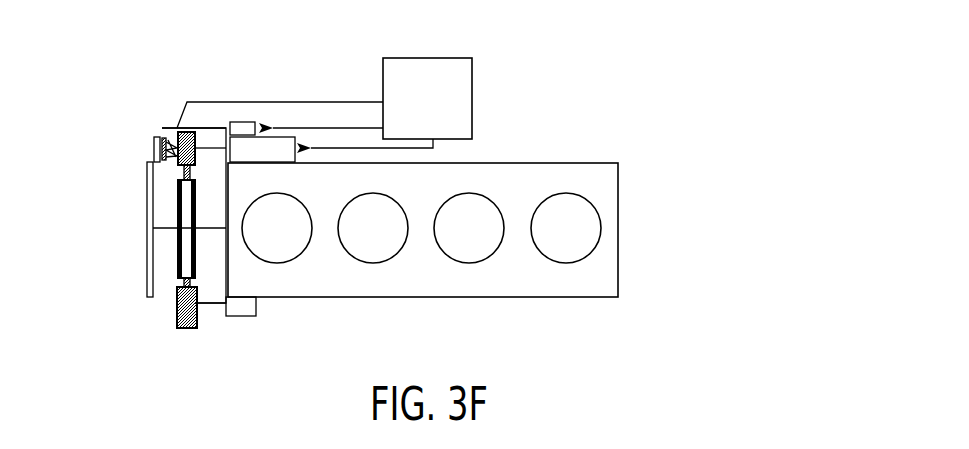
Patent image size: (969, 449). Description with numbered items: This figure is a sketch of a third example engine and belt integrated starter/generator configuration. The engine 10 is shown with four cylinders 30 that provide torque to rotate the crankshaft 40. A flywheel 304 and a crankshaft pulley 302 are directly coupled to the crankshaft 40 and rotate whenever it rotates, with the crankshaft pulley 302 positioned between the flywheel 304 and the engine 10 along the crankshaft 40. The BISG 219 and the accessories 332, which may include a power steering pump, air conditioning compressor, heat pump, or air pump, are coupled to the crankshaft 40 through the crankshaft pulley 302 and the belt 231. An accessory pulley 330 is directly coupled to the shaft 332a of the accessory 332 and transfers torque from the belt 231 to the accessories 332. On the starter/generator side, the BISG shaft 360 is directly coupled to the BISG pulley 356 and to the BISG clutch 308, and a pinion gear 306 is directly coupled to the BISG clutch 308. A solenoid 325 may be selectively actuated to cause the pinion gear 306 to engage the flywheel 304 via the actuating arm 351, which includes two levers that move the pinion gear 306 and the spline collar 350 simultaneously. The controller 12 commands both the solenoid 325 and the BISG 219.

The engine 10 is at (600, 138).
The controller 12 is at (442, 108).
The cylinders 30 is at (421, 228).
The crankshaft 40 is at (221, 232).
The BISG 219 is at (283, 128).
The belt 231 is at (178, 211).
The crankshaft pulley 302 is at (178, 279).
The flywheel 304 is at (146, 229).
The pinion gear 306 is at (147, 155).
The BISG clutch 308 is at (163, 136).
The solenoid 325 is at (253, 122).
The accessory pulley 330 is at (183, 327).
The accessories 332 is at (240, 310).
The shaft of accessory 332a is at (218, 305).
The spline collar 350 is at (173, 131).
The actuating arm 351 is at (213, 128).
The BISG pulley 356 is at (182, 128).
The BISG shaft 360 is at (215, 148).